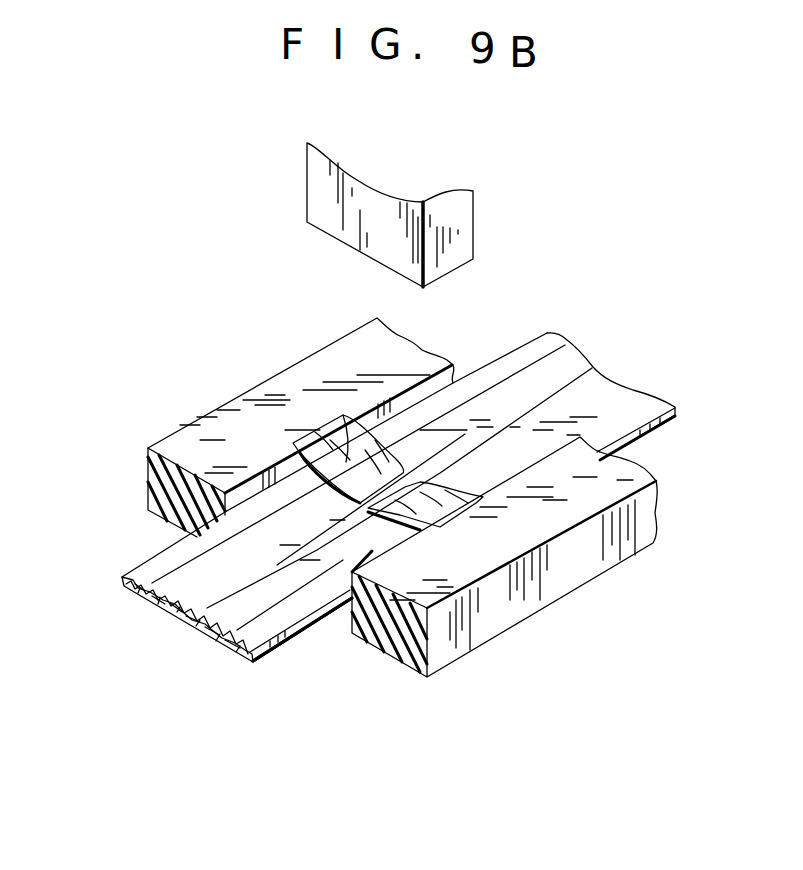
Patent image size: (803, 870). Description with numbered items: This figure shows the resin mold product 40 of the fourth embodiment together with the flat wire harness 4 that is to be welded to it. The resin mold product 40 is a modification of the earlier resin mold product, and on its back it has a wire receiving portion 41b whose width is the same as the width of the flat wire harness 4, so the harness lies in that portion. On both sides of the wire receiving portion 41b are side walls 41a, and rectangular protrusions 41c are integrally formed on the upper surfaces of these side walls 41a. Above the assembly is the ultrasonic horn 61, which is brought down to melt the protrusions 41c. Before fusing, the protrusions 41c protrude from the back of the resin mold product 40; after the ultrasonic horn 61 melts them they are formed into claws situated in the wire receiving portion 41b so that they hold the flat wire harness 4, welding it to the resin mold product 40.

The flat wire harness 4 is at (180, 618).
The resin mold product 40 is at (532, 651).
The side walls 41a is at (365, 553).
The wire receiving portion 41b is at (347, 592).
The rectangular protrusions 41c is at (327, 437).
The ultrasonic horn 61 is at (473, 225).